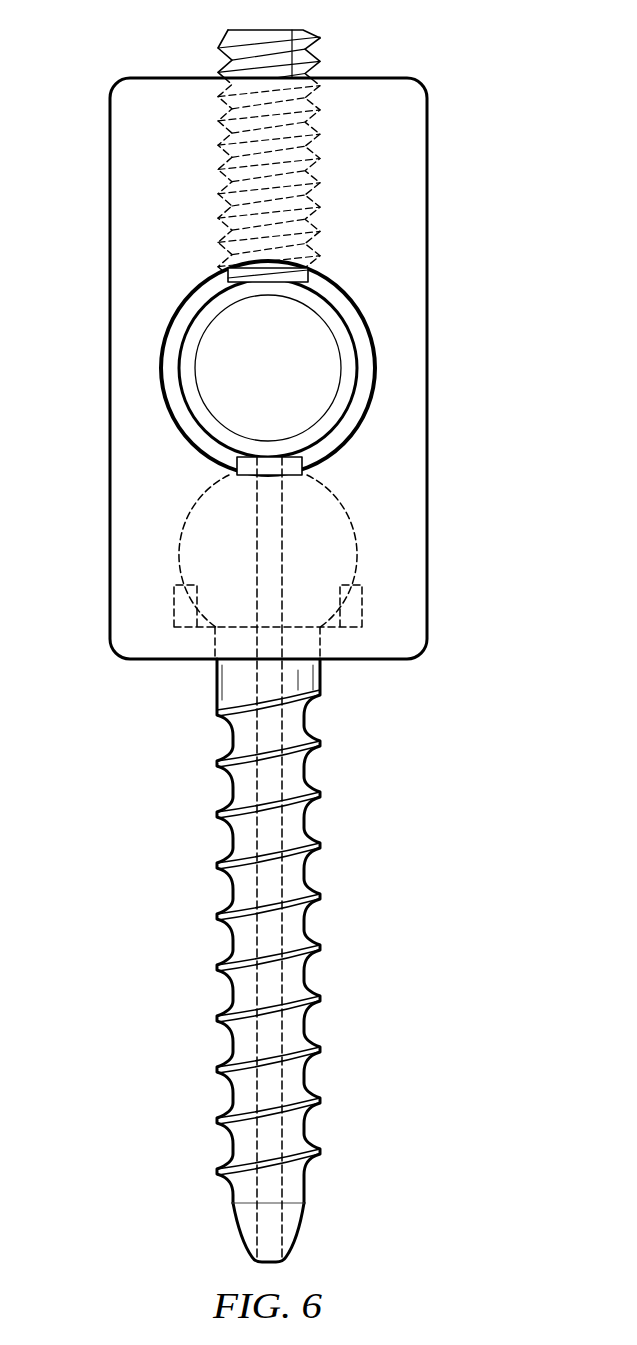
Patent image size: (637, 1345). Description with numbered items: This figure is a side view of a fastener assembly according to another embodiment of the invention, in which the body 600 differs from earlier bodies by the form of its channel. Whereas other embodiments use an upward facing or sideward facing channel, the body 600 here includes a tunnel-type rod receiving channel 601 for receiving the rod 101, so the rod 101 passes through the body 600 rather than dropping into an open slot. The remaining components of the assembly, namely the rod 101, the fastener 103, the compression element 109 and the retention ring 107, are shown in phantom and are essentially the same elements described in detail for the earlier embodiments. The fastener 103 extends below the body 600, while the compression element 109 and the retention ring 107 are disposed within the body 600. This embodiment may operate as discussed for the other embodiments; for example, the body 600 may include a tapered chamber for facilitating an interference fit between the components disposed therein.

The body 600 is at (110, 266).
The compression element 109 is at (218, 45).
The rod 101 is at (330, 302).
The rod receiving channel 601 is at (168, 380).
The fastener 103 is at (338, 500).
The retention ring 107 is at (362, 610).